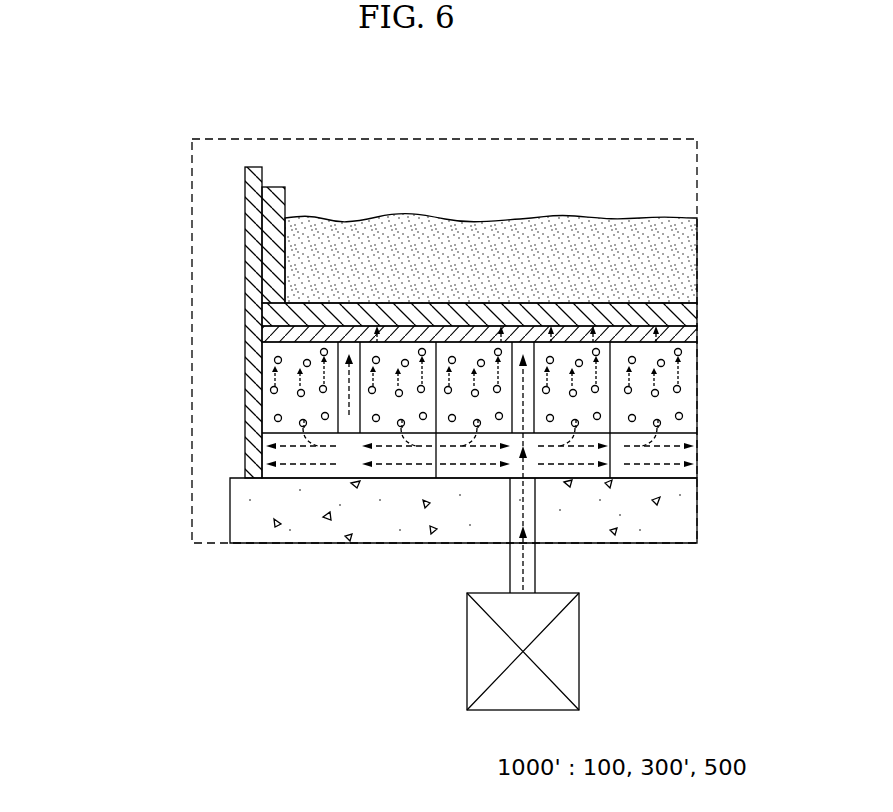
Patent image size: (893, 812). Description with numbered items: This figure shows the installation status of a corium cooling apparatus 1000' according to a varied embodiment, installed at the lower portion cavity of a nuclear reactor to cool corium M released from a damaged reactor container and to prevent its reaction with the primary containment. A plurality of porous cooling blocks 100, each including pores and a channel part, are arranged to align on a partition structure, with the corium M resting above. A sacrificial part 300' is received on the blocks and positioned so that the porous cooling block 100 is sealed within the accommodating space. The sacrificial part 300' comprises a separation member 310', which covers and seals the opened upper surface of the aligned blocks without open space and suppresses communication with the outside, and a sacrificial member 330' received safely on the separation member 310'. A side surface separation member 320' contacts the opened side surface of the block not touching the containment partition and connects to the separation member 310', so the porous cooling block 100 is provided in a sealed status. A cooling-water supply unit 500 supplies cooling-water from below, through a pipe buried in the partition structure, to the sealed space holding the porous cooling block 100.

The corium cooling apparatus 1000' is at (397, 381).
The corium M is at (690, 283).
The sacrificial part 300' is at (368, 446).
The sacrificial member 330' is at (406, 315).
The separation member 310' is at (406, 344).
The side surface separation member 320' is at (406, 466).
The porous cooling block 100 is at (679, 482).
The cooling-water supply unit 500 is at (460, 655).